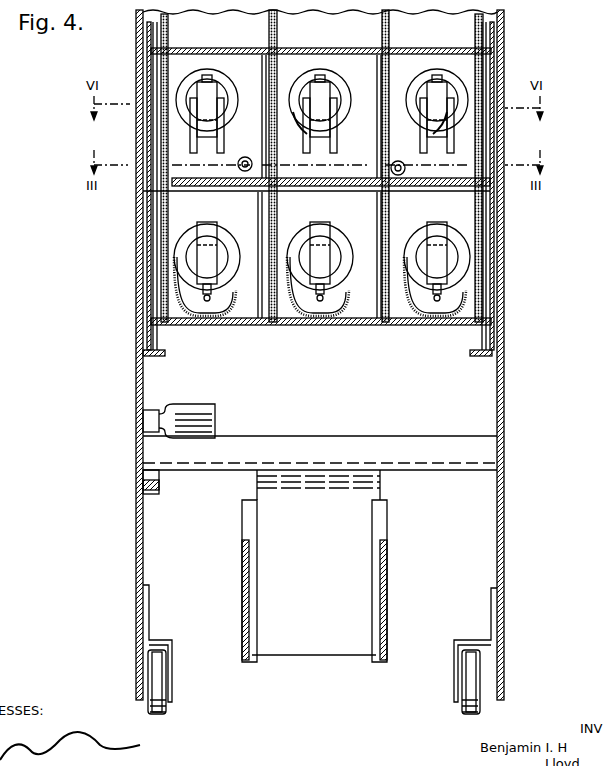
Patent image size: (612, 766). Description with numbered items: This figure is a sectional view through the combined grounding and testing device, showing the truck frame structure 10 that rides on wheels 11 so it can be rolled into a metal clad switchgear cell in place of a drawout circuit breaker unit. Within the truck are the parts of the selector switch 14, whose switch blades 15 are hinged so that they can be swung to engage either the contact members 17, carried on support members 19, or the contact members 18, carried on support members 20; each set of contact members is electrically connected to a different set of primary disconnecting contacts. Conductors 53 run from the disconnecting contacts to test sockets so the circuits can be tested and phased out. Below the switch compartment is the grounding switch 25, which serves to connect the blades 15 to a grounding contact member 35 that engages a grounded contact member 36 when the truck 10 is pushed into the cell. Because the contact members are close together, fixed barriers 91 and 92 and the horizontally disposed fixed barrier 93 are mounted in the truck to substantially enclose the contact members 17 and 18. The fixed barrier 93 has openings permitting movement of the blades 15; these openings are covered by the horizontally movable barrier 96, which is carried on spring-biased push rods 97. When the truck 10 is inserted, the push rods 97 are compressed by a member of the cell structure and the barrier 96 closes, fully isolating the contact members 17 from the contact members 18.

The truck frame structure 10 is at (116, 371).
The wheels 11 is at (166, 708).
The selector switch 14 is at (226, 92).
The switch blades 15 is at (212, 147).
The contact members 17 is at (325, 98).
The contact members 18 is at (320, 234).
The support members 19 is at (298, 126).
The support members 20 is at (344, 246).
The grounding switch 25 is at (416, 539).
The grounding contact member 35 is at (215, 404).
The grounded contact member 36 is at (213, 418).
The conductors 53 is at (176, 33).
The fixed barrier 91 is at (344, 48).
The fixed barrier 92 is at (262, 324).
The horizontally disposed fixed barrier 93 is at (168, 194).
The horizontally disposed barrier 96 is at (356, 178).
The push rods 97 is at (406, 162).